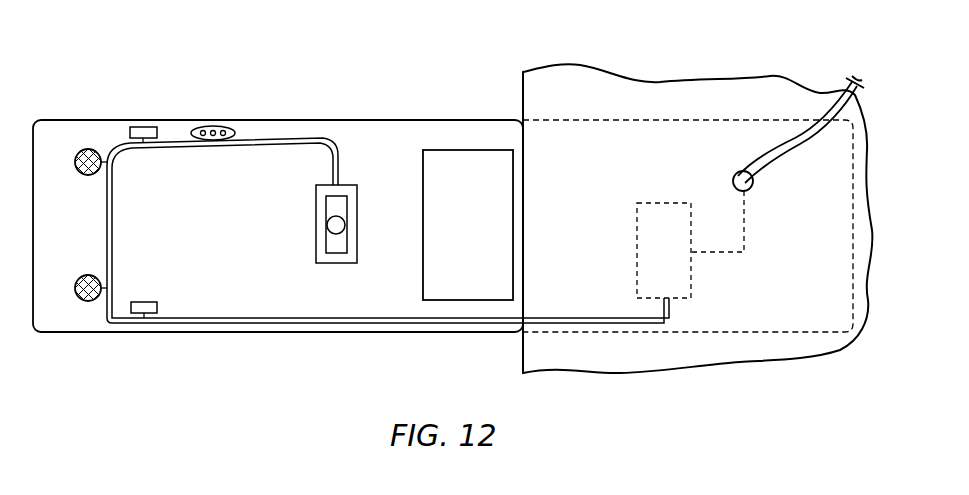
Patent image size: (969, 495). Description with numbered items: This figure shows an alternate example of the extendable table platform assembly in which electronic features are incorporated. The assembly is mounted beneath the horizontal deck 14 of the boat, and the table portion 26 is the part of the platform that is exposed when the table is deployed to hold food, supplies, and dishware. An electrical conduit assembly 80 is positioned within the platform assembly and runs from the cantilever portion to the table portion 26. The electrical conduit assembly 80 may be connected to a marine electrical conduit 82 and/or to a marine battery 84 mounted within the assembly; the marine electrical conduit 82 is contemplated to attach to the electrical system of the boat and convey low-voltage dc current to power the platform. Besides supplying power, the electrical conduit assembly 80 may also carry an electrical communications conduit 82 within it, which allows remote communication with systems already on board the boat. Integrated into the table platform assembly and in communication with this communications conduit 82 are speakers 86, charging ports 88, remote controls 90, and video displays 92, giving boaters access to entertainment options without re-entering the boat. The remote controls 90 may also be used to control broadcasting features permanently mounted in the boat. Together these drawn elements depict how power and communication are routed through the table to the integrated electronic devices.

The horizontal deck 14 is at (543, 92).
The table portion 26 is at (510, 115).
The electrical conduit assembly 80 is at (170, 324).
The marine electrical conduit 82 is at (738, 174).
The marine battery 84 is at (683, 298).
The speakers 86 is at (88, 149).
The charging ports 88 is at (143, 127).
The remote controls 90 is at (213, 126).
The video displays 92 is at (335, 263).